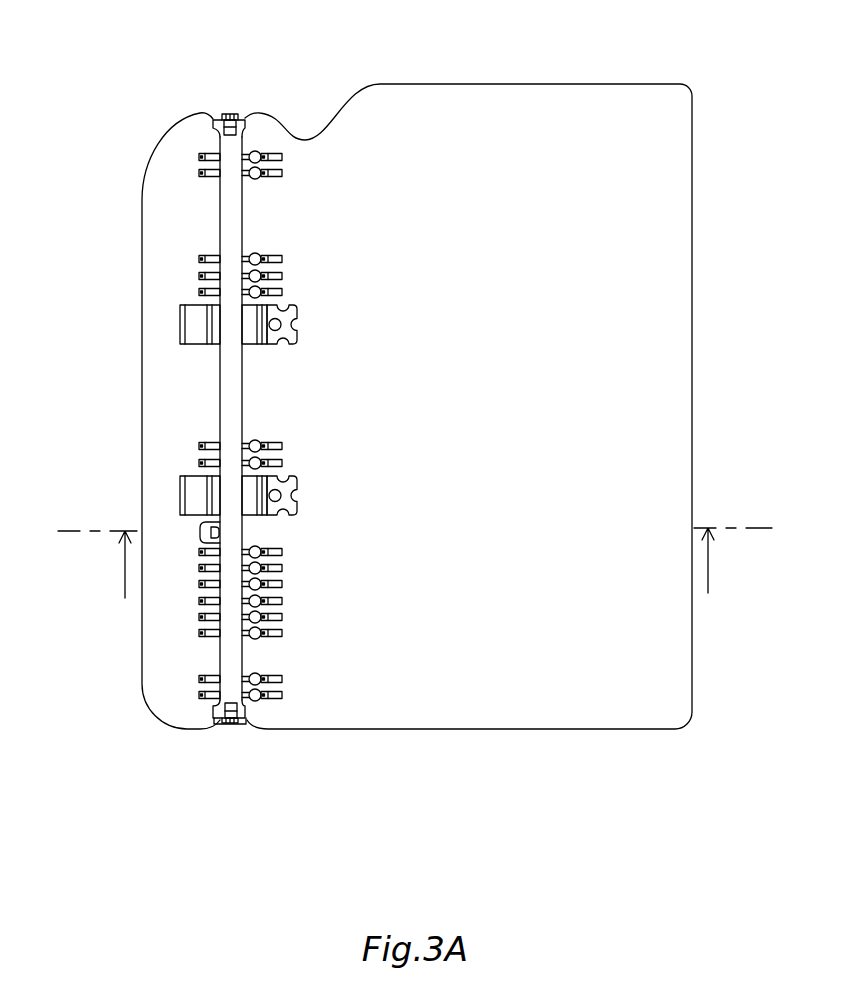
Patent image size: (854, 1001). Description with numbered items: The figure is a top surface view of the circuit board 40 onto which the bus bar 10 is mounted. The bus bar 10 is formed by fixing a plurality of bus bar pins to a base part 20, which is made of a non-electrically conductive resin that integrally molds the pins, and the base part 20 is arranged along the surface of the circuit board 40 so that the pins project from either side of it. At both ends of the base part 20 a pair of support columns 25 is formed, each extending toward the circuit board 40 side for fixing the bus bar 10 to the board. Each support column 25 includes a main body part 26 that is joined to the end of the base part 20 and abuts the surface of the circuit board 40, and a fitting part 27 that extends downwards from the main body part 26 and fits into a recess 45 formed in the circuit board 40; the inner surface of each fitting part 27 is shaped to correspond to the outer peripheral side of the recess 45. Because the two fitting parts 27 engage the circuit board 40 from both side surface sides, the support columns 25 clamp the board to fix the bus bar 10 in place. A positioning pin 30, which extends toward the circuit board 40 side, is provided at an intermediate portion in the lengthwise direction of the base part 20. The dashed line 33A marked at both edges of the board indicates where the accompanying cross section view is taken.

The bus bar 10 is at (371, 418).
The base part 20 is at (223, 230).
The support column 25 is at (196, 130).
The main body part 26 is at (221, 726).
The fitting part 27 is at (222, 118).
The positioning pin 30 is at (198, 531).
The circuit board 40 is at (418, 94).
The recess 45 is at (240, 117).
The line 33A- 33A is at (415, 563).